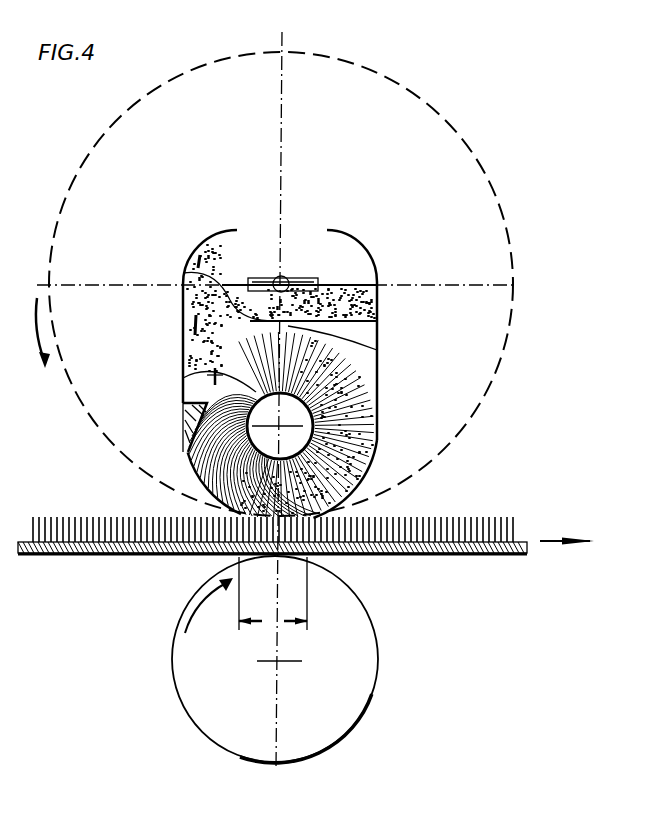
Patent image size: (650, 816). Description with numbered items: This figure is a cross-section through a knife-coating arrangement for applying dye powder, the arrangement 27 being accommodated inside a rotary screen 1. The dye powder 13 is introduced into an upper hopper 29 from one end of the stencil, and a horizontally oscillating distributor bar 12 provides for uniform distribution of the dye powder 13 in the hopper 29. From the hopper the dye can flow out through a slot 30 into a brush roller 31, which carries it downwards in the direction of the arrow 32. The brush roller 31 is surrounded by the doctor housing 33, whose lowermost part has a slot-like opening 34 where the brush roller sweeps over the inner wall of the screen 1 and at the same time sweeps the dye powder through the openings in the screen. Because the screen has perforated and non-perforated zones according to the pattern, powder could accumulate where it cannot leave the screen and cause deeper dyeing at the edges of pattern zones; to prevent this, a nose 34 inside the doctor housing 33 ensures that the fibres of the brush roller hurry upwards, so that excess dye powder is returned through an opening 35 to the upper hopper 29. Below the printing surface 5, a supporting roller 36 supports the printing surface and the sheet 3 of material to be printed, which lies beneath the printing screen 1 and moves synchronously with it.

The rotary screen 1 is at (446, 121).
The sheet of material 3 is at (78, 518).
The printing surface 5 is at (85, 552).
The distributor bar 12 is at (278, 274).
The dye powder 13 is at (379, 301).
The arrangement for applying the dye powder 27 is at (303, 357).
The upper hopper 29 is at (298, 244).
The slot 30 is at (377, 350).
The brush roller 31 is at (379, 442).
The arrow 32 is at (370, 478).
The doctor housing 33 is at (182, 394).
The slot-like opening / nose 34 is at (186, 419).
The opening 35 is at (183, 272).
The supporting roller 36 is at (208, 714).